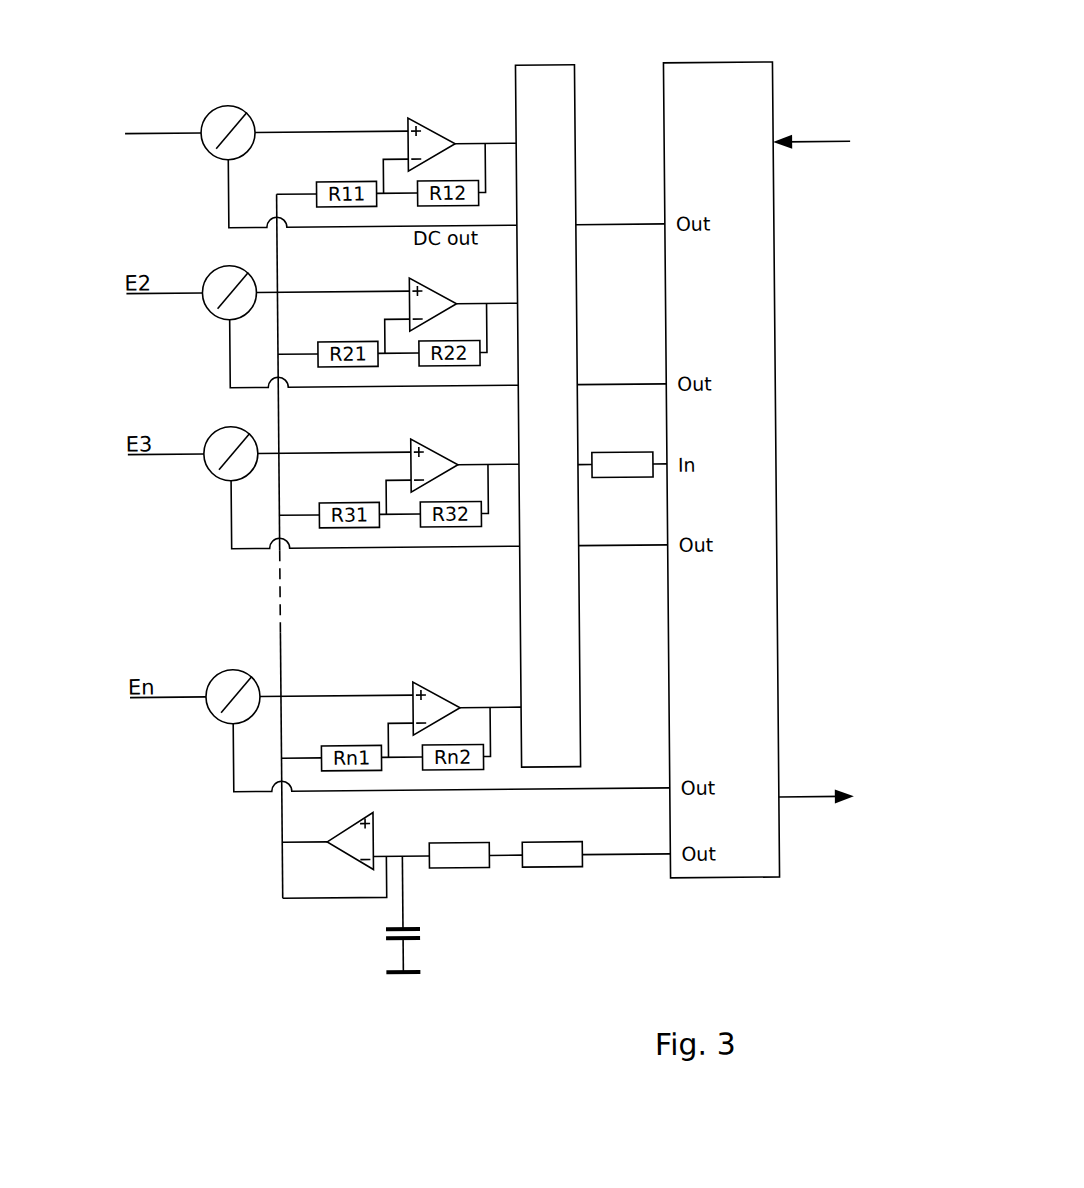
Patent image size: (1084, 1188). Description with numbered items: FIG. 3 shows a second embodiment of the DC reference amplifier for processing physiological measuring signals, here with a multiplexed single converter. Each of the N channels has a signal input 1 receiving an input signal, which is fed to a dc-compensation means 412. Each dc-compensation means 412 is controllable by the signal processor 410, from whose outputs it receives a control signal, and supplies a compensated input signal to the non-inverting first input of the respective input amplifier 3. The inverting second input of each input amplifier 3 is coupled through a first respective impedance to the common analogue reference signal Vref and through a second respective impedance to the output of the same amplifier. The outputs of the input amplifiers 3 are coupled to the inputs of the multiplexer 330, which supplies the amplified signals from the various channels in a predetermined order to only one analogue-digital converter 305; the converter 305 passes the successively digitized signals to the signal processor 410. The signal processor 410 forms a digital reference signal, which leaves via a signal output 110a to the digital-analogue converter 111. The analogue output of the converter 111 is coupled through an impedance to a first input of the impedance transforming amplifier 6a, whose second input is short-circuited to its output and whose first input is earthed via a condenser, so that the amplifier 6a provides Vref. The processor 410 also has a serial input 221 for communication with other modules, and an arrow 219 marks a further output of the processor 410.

The signal input 1 is at (143, 130).
The input amplifier 3 is at (434, 100).
The dc-compensation means 412 is at (232, 103).
The multiplexer 330 is at (549, 65).
The signal processor 410 is at (729, 64).
The serial input 221 is at (822, 144).
The analogue-digital converter 305 is at (622, 478).
The output signal 219 is at (821, 799).
The impedance transforming amplifier 6a is at (338, 910).
The digital-analogue converter 111 is at (549, 867).
The signal output 110a is at (614, 855).